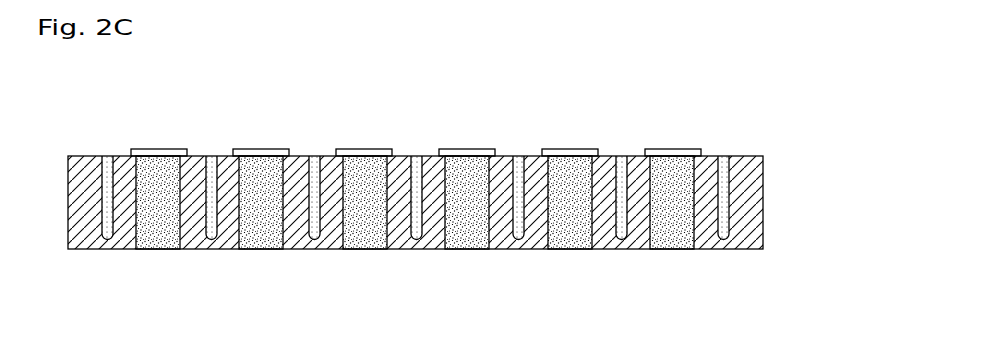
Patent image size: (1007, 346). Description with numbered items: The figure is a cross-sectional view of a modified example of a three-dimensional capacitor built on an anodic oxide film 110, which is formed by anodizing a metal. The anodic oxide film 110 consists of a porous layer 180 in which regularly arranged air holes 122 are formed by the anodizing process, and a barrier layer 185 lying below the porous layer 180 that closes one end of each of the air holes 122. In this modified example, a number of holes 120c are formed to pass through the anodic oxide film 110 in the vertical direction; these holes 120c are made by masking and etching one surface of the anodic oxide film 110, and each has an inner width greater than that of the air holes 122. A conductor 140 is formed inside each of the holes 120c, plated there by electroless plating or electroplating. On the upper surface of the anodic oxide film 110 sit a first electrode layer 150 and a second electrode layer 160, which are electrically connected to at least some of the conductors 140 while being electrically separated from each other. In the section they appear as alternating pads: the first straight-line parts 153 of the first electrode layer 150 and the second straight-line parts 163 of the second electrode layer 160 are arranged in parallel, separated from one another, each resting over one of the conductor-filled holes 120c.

The anodic oxide film 110 is at (477, 223).
The porous layer 180 is at (453, 223).
The barrier layer 185 is at (727, 245).
The air holes 122 is at (727, 183).
The conductor 140 is at (660, 190).
The holes 120c is at (697, 222).
The first electrode layer 150 is at (348, 110).
The first straight-line parts 153 is at (158, 149).
The second electrode layer 160 is at (479, 110).
The second straight-line parts 163 is at (262, 149).